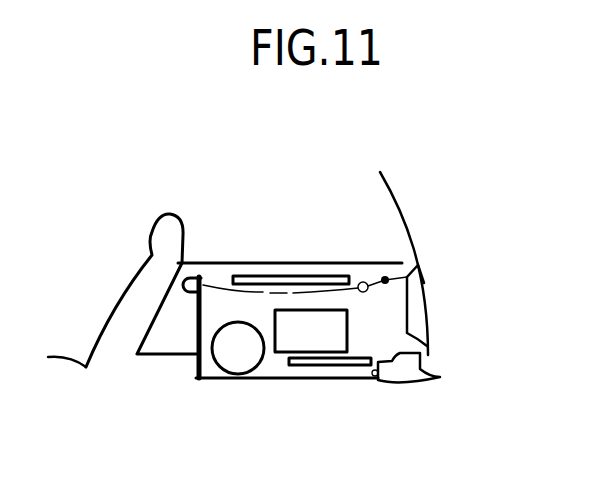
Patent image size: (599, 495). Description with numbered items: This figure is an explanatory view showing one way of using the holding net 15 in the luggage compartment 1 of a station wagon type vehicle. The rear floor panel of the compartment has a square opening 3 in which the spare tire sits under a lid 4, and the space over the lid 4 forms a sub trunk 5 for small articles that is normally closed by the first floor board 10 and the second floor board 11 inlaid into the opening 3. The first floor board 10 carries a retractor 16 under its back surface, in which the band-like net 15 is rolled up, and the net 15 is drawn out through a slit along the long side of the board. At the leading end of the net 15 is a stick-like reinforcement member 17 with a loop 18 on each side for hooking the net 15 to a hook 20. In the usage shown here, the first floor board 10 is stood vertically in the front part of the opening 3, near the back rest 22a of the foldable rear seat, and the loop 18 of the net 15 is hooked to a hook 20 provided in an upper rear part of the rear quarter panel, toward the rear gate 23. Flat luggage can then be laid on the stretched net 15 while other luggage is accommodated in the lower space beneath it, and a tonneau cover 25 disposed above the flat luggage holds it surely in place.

The luggage compartment 1 is at (285, 212).
The opening 3 is at (452, 400).
The lid 4 is at (243, 380).
The sub trunk 5 is at (278, 368).
The first floor board 10 is at (195, 328).
The second floor board 11 is at (342, 367).
The holding net 15 is at (214, 290).
The retractor 16 is at (198, 275).
The reinforcement member 17 is at (359, 283).
The loop 18 is at (376, 277).
The hook 20 is at (410, 278).
The back rest 22a is at (164, 222).
The rear gate 23 is at (413, 219).
The tonneau cover 25 is at (296, 272).